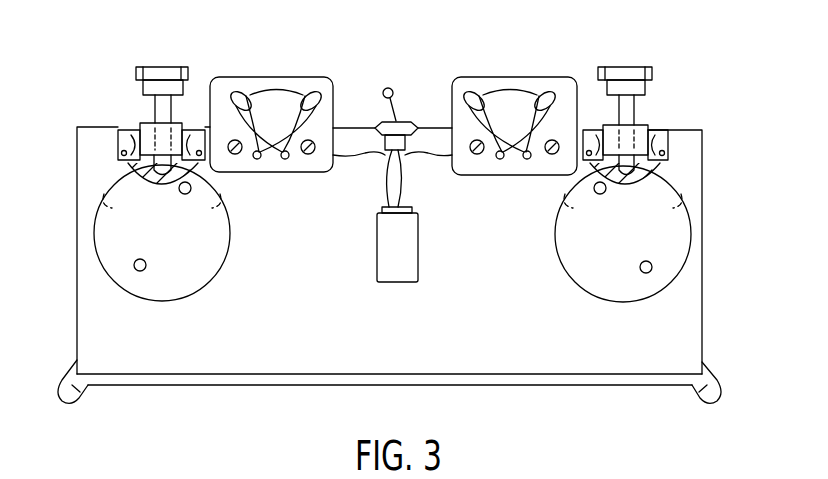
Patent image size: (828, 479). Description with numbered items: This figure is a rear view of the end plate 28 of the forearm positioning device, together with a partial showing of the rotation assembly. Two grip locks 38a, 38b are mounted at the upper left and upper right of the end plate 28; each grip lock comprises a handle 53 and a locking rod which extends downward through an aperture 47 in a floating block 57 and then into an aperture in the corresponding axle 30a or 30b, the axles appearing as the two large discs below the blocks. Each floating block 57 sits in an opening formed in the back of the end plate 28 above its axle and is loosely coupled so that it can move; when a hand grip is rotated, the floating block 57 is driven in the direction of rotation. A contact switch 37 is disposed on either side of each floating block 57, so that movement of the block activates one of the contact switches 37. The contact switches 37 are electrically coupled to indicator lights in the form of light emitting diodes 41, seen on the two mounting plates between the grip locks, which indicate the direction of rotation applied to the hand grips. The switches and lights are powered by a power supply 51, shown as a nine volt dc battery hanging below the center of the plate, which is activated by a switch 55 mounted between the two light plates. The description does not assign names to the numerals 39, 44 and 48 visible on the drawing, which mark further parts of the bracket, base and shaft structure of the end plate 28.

The end plate 28 is at (515, 331).
The axle 30a is at (116, 298).
The axle 30b is at (676, 292).
The contact switch 37 is at (118, 128).
The grip lock 38a is at (142, 98).
The grip lock 38b is at (640, 62).
The bracket 39 is at (196, 130).
The light emitting diode 41 is at (243, 97).
The base 44 is at (716, 386).
The aperture 47 is at (640, 172).
The shaft 48 is at (155, 113).
The power supply 51 is at (415, 282).
The handle 53 is at (165, 67).
The switch 55 is at (392, 95).
The floating block 57 is at (648, 131).